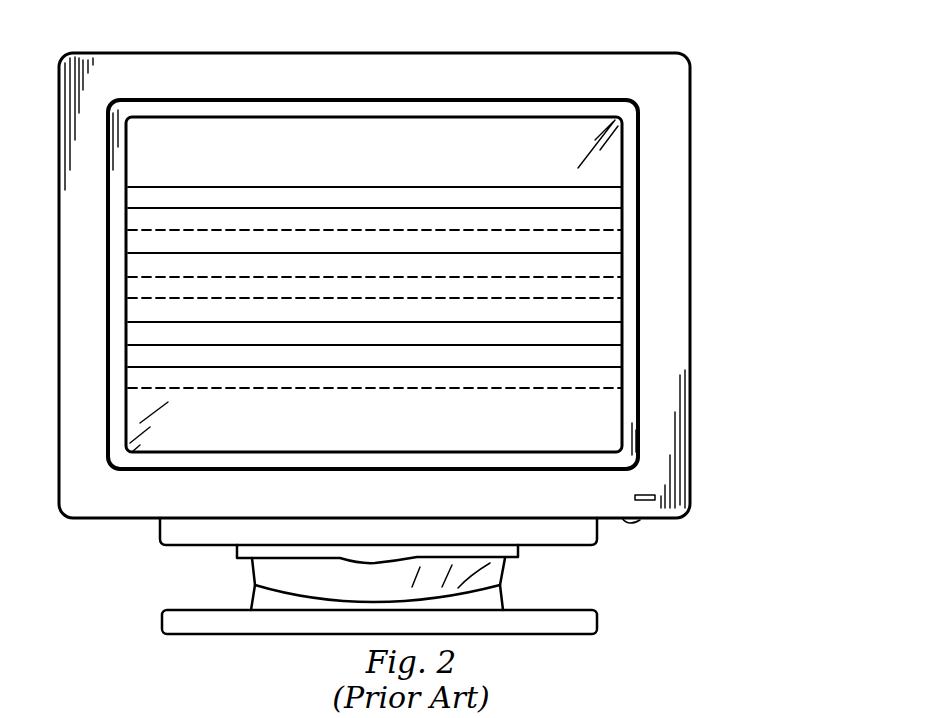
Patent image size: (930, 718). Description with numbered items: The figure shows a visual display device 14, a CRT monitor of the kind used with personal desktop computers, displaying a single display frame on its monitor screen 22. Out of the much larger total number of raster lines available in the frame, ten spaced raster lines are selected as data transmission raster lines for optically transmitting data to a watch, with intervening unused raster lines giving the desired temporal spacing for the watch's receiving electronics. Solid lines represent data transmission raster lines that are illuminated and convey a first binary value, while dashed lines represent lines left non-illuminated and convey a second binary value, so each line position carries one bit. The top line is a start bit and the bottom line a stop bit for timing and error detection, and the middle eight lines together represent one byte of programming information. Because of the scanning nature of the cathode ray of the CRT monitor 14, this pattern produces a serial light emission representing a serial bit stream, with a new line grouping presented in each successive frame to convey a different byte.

The visual display device 14 is at (607, 507).
The monitor screen 22 is at (558, 130).